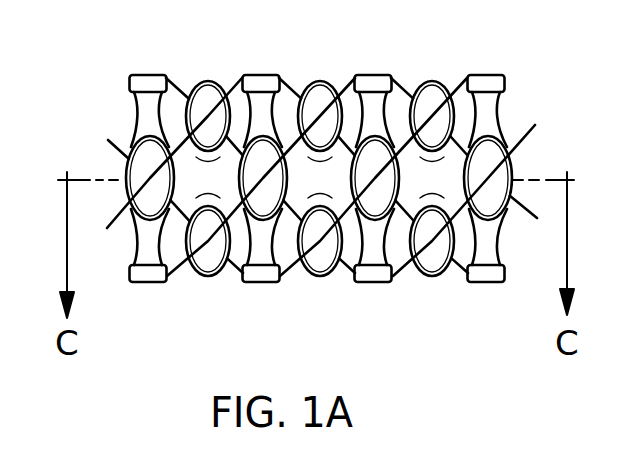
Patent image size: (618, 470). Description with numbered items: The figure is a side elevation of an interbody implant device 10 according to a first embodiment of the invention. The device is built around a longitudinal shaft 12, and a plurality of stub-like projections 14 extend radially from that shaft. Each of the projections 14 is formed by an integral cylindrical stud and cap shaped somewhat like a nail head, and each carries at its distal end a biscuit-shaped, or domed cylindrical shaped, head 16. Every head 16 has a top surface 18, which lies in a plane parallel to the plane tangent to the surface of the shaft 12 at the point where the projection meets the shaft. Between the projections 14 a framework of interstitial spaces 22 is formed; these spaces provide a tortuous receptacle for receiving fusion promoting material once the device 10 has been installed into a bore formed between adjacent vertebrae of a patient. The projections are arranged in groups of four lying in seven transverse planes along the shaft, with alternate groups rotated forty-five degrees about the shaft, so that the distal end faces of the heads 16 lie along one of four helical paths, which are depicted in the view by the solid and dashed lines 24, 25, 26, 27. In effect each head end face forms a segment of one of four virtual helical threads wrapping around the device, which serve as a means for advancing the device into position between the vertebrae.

The interbody implant device 10 is at (530, 42).
The longitudinal shaft 12 is at (178, 147).
The projections 14 is at (490, 100).
The head 16 is at (137, 80).
The top surface 18 is at (435, 252).
The interstitial spaces 22 is at (217, 175).
The helical path line 24 is at (213, 110).
The helical path line 25 is at (343, 90).
The helical path line 26 is at (457, 90).
The helical path line 27 is at (522, 140).